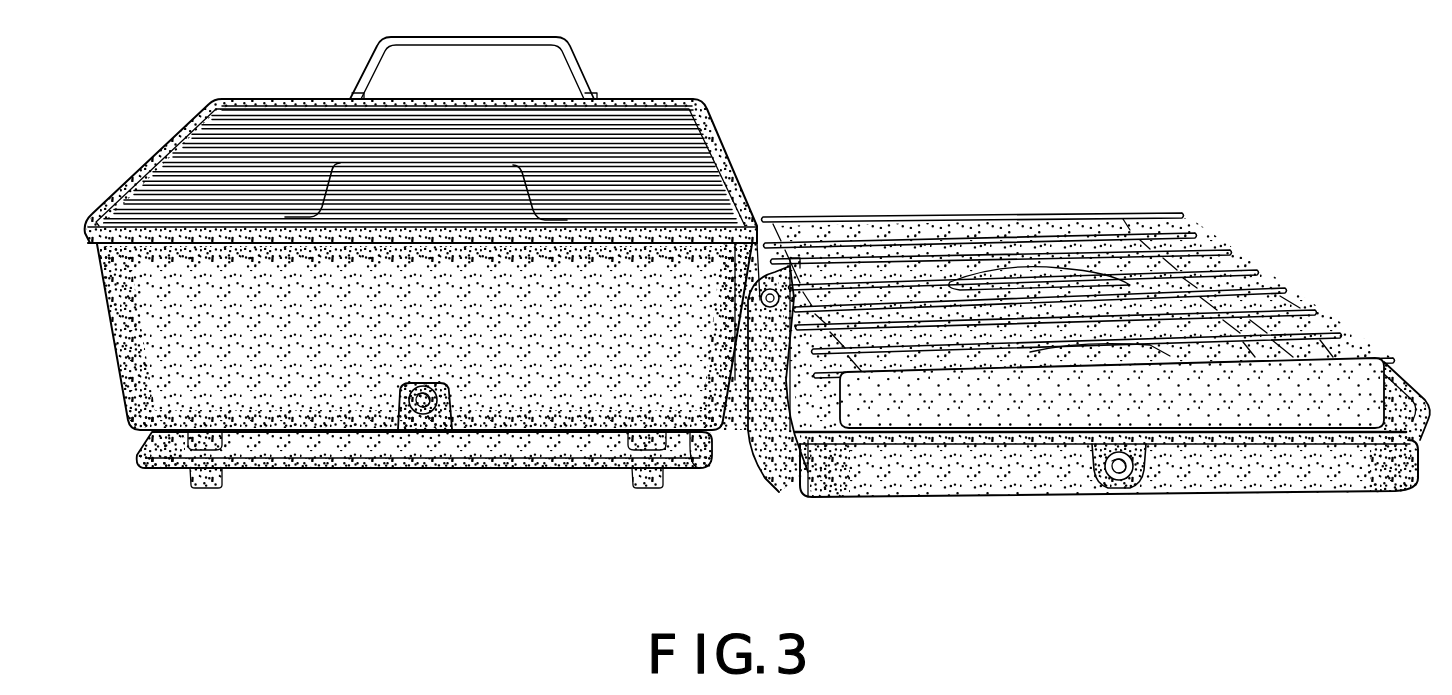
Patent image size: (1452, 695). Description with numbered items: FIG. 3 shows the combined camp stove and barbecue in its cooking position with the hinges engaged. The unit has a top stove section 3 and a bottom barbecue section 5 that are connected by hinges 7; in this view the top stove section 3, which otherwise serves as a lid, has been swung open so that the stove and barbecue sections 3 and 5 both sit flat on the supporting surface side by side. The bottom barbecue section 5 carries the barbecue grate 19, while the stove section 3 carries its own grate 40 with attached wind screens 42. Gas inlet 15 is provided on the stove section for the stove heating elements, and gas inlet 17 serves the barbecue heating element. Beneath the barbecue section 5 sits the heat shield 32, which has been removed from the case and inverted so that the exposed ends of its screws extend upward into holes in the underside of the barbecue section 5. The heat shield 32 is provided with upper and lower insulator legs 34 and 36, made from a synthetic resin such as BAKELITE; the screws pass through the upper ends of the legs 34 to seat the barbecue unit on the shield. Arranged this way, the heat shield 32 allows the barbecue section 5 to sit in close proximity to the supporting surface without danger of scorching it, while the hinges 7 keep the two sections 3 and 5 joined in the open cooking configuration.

The top stove section 3 is at (1297, 490).
The bottom barbecue section 5 is at (114, 342).
The hinges 7 is at (766, 428).
The gas inlet 15 is at (1122, 492).
The gas inlet 17 is at (457, 392).
The grate 19 is at (672, 100).
The heat shield 32 is at (581, 470).
The upper insulator legs 34 is at (674, 438).
The lower insulator legs 36 is at (645, 480).
The grate 40 is at (1285, 290).
The wind screens 42 is at (1360, 372).